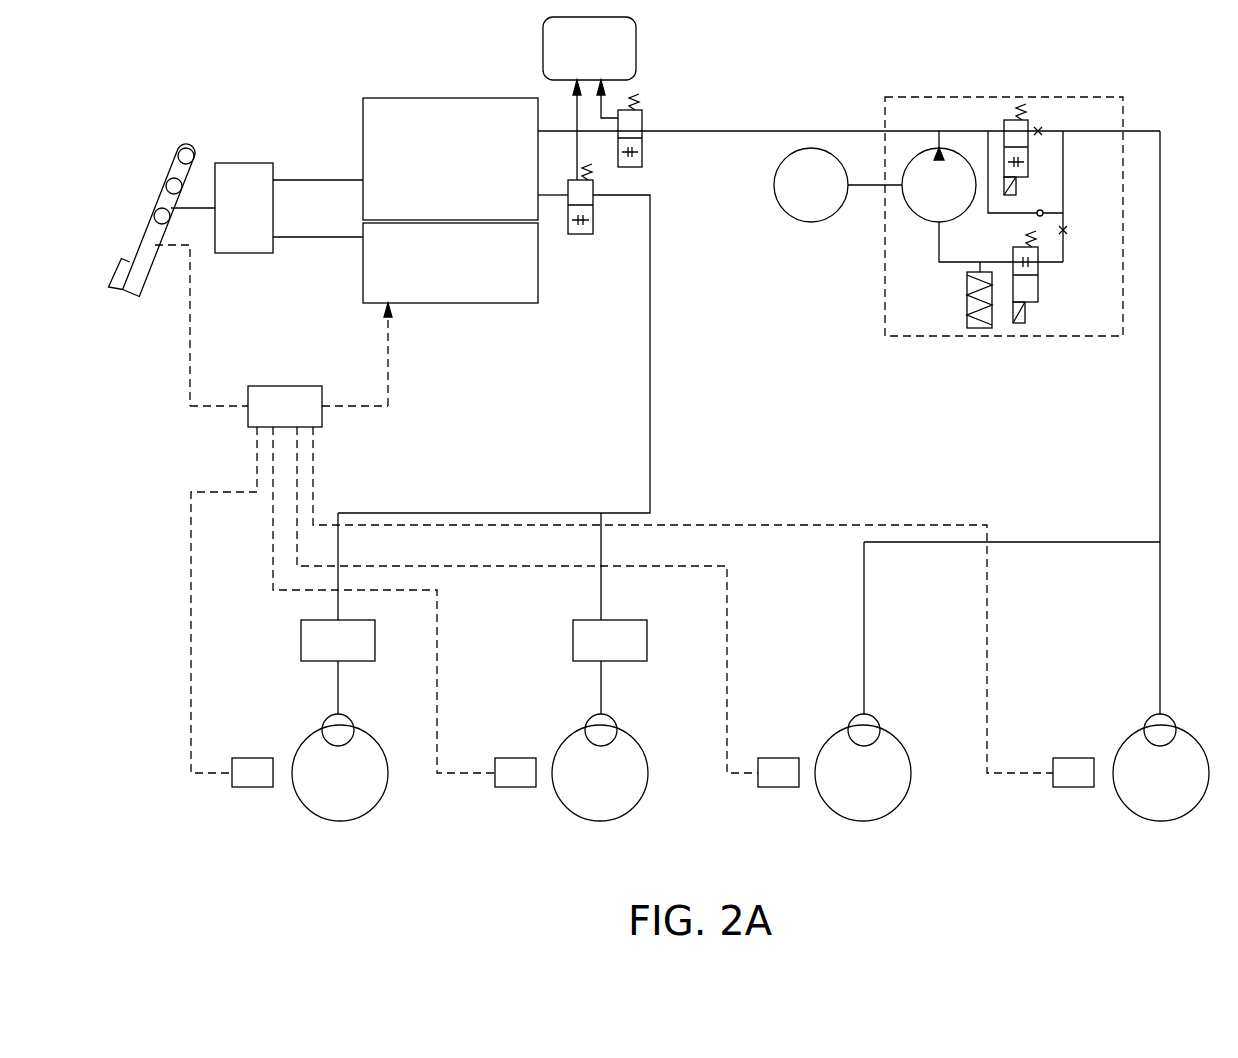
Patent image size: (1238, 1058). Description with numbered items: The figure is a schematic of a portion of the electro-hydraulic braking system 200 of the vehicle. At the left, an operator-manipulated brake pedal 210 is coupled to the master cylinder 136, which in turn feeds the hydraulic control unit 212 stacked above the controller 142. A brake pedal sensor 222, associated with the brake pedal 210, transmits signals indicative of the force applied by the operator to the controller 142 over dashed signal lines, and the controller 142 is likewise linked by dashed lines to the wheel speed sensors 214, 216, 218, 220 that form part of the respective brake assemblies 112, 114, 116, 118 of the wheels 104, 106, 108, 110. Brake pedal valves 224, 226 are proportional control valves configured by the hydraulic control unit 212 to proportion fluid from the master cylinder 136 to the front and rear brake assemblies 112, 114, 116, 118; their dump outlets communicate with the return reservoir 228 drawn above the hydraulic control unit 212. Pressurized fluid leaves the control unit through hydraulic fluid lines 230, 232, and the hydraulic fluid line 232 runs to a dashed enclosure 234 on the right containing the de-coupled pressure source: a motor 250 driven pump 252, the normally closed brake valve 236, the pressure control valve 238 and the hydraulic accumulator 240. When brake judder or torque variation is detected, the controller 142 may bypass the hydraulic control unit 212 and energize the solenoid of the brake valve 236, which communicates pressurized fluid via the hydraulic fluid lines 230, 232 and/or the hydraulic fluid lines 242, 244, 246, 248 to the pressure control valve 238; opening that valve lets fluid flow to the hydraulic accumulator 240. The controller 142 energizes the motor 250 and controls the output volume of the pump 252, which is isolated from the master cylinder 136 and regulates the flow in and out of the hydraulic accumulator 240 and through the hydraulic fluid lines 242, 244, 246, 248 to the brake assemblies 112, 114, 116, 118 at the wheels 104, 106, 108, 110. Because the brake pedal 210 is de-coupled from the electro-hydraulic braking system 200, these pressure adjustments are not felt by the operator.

The electro-hydraulic braking system 200 is at (214, 840).
The brake pedal 210 is at (140, 244).
The master cylinder 136 is at (230, 216).
The hydraulic control unit 212 is at (430, 209).
The controller 142 is at (430, 287).
The return reservoir 228 is at (576, 57).
The brake pedal valve 226 is at (642, 117).
The brake pedal valve 224 is at (567, 190).
The hydraulic fluid line 232 is at (710, 129).
The hydraulic fluid line 230 is at (649, 318).
The motor 250 is at (794, 210).
The pump 252 is at (922, 210).
The valve assembly 234 is at (884, 320).
The brake valve 236 is at (1003, 117).
The pressure control valve 238 is at (1040, 304).
The hydraulic accumulator 240 is at (966, 310).
The brake pedal sensor 222 is at (271, 415).
The hydraulic fluid line 248 is at (337, 702).
The hydraulic fluid line 246 is at (600, 702).
The hydraulic fluid line 244 is at (862, 570).
The hydraulic fluid line 242 is at (1162, 600).
The brake assembly 112 is at (352, 716).
The brake assembly 114 is at (615, 716).
The brake assembly 116 is at (877, 716).
The brake assembly 118 is at (1175, 716).
The wheel 104 is at (323, 800).
The wheel 106 is at (583, 800).
The wheel 108 is at (846, 800).
The wheel 110 is at (1144, 800).
The wheel speed sensor 214 is at (232, 787).
The wheel speed sensor 216 is at (495, 787).
The wheel speed sensor 218 is at (758, 787).
The wheel speed sensor 220 is at (1053, 787).